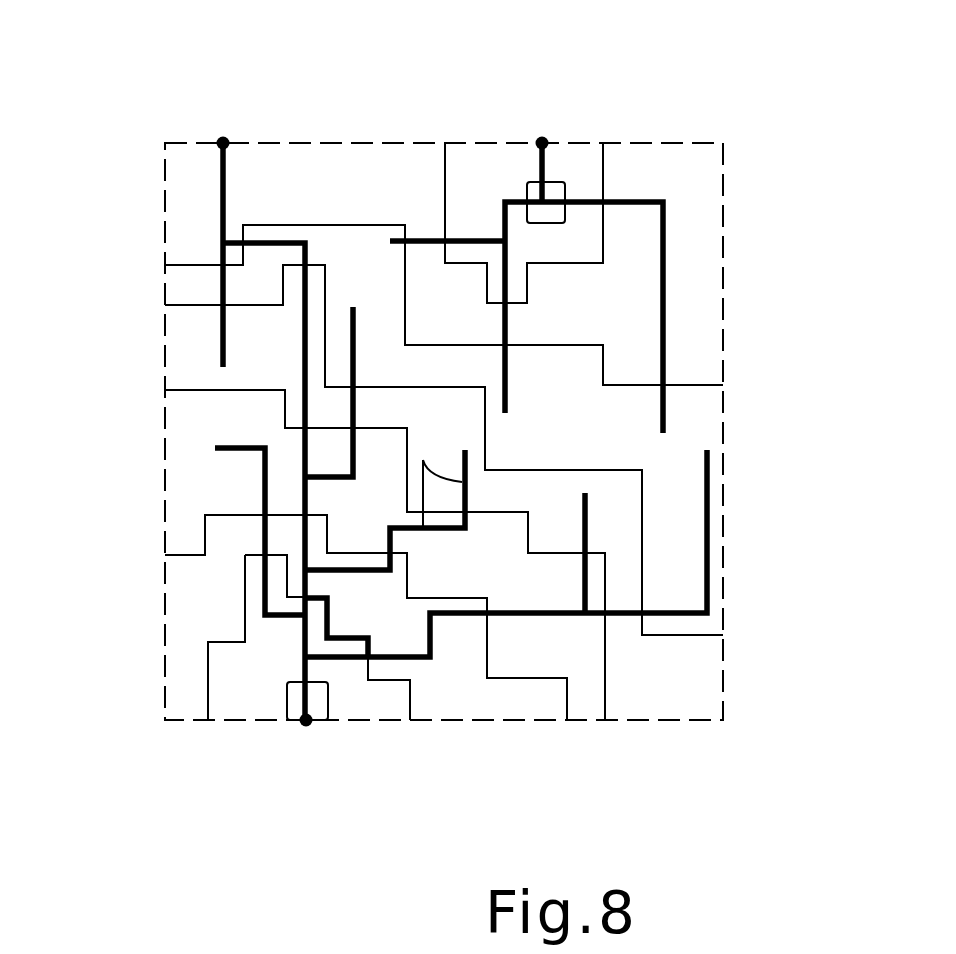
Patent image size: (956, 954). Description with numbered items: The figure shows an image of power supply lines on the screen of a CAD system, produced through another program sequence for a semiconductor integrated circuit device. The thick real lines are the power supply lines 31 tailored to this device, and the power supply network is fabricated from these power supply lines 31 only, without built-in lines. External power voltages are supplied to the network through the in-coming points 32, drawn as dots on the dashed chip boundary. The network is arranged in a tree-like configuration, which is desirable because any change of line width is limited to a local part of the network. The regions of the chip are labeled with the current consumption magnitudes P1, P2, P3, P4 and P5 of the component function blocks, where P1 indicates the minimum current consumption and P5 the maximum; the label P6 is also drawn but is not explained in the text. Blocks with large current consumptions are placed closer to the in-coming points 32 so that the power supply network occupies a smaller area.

The power supply lines 31 is at (220, 172).
The in-coming points 32 is at (223, 143).
The current consumption magnitude P1 is at (556, 428).
The current consumption magnitude P2 is at (574, 398).
The current consumption magnitude P3 is at (465, 369).
The current consumption magnitude P4 is at (553, 183).
The current consumption magnitude P5 is at (246, 667).
The pad P6 is at (285, 700).